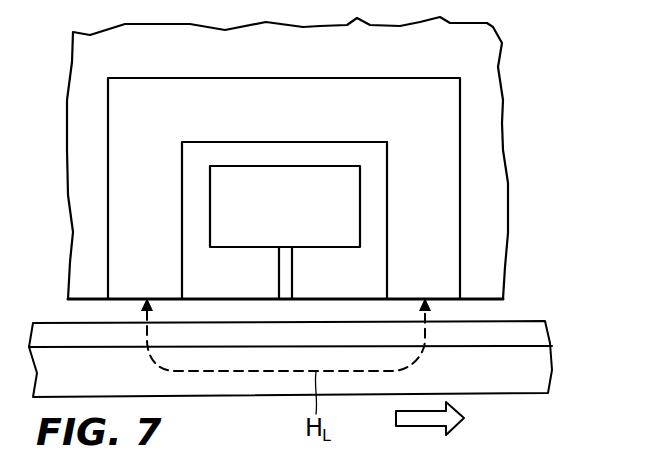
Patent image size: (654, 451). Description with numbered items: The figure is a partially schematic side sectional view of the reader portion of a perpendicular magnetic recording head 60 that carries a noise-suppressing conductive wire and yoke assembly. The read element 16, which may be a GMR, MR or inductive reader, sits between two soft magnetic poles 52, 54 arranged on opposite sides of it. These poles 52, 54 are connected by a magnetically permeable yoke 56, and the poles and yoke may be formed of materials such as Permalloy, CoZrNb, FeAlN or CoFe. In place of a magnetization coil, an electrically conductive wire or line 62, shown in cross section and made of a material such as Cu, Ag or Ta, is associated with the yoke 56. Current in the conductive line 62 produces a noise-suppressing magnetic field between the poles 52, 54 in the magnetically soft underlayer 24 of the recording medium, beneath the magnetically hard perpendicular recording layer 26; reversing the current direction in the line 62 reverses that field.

The print head body 60 is at (95, 62).
The magnetically permeable yoke 56 is at (297, 122).
The soft magnetic pole 54 is at (157, 255).
The soft magnetic pole 52 is at (433, 252).
The electrically conductive wire or line 62 is at (297, 216).
The read element 16 is at (287, 272).
The magnetically hard perpendicular recording layer 26 is at (537, 331).
The magnetically soft underlayer 24 is at (536, 372).